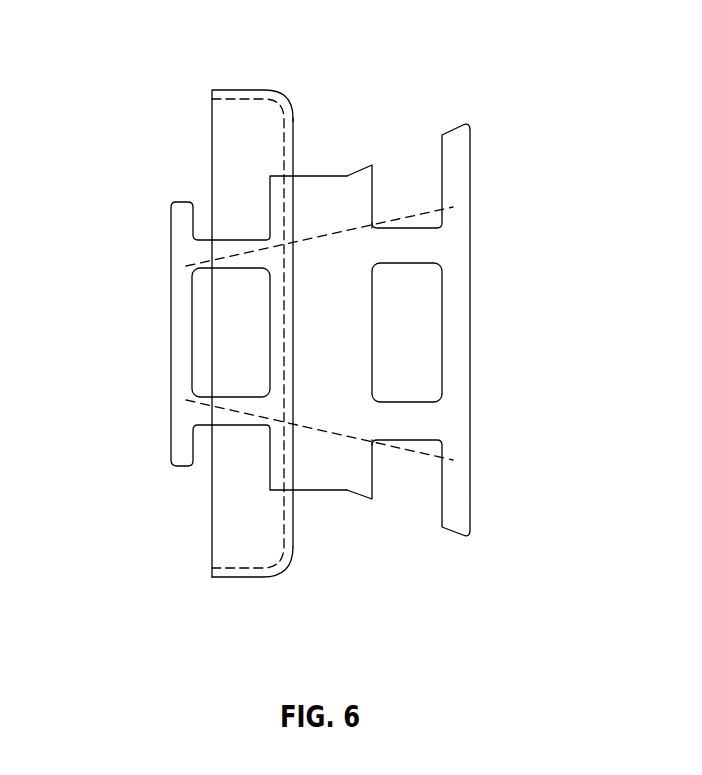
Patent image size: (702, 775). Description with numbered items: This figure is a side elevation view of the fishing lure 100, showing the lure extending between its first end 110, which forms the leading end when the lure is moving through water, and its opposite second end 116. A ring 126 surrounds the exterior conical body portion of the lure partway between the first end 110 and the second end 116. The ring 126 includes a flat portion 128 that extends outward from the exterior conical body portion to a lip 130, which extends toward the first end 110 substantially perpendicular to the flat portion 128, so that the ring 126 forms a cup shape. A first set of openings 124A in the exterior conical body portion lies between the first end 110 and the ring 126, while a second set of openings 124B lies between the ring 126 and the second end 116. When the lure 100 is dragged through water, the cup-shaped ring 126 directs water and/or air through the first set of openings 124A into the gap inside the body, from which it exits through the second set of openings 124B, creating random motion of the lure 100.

The fishing lure 100 is at (512, 70).
The first end 110 is at (157, 221).
The second end 116 is at (485, 237).
The first set of openings 124A is at (203, 212).
The second set of openings 124B is at (417, 193).
The ring 126 is at (253, 587).
The flat portion 128 is at (297, 537).
The lip 130 is at (222, 579).